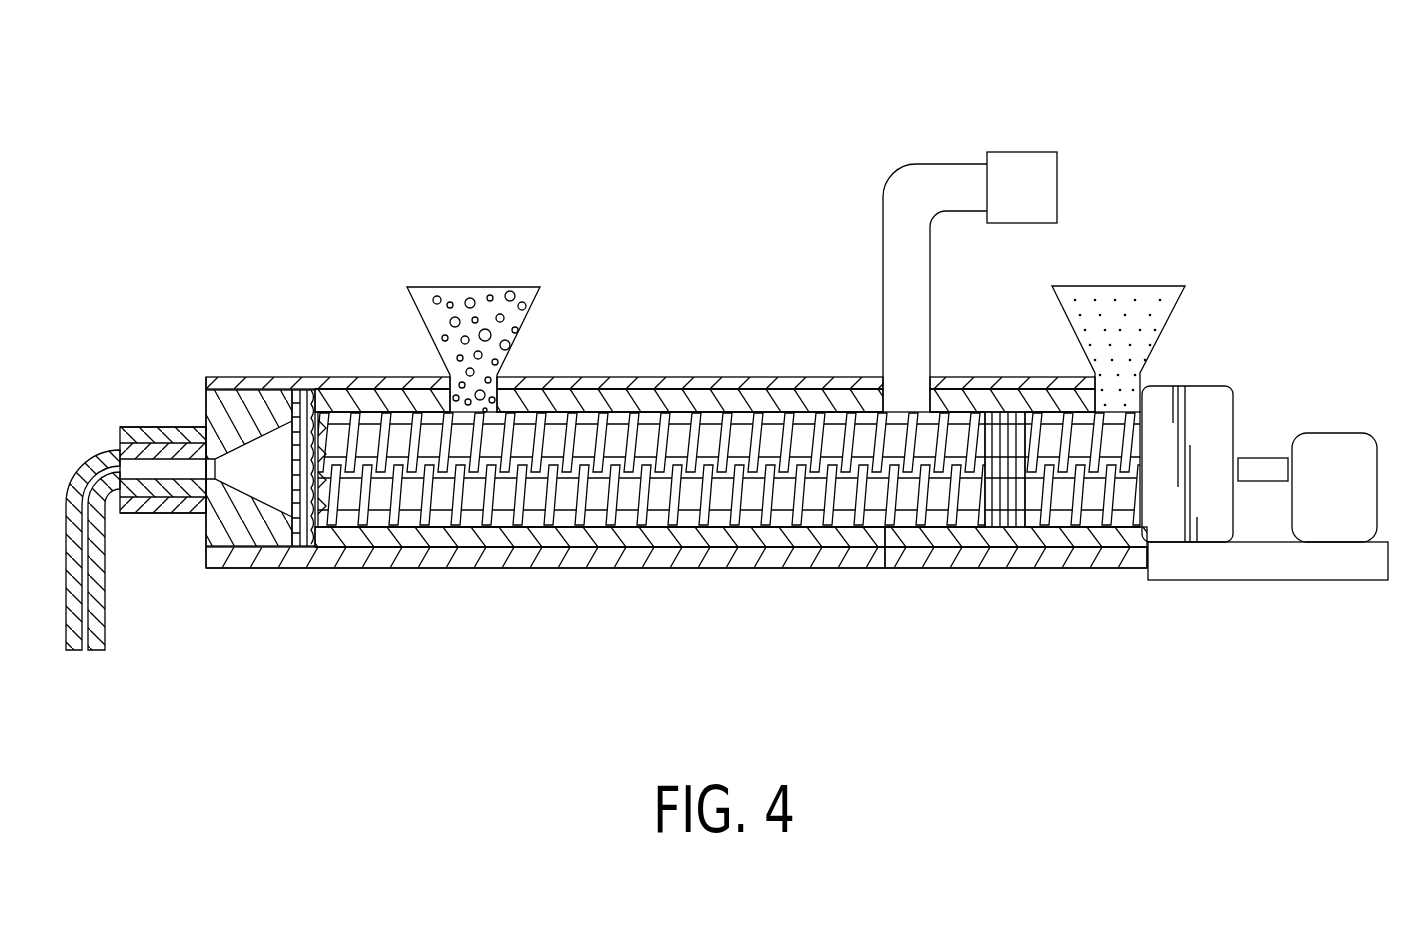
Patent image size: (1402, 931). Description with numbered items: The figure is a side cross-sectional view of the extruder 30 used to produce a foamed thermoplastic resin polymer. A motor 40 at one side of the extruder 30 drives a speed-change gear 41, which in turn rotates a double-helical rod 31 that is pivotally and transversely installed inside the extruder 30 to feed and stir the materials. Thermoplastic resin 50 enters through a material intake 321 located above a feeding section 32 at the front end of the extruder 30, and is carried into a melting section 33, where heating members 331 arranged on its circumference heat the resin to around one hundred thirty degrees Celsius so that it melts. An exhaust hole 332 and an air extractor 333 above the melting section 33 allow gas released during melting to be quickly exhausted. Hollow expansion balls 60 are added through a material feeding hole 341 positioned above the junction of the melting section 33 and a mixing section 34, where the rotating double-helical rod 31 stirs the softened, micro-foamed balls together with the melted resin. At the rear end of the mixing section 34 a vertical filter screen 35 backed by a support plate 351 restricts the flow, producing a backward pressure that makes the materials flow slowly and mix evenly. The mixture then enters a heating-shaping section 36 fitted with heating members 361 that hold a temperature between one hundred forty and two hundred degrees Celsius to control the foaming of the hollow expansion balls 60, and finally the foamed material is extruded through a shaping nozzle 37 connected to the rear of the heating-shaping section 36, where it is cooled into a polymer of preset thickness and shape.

The extruder 30 is at (1252, 150).
The double-helical rod 31 is at (1057, 418).
The feeding section 32 is at (1118, 570).
The material intake 321 is at (1145, 285).
The melting section 33 is at (905, 568).
The heating members 331 is at (1035, 568).
The exhaust hole 332 is at (897, 242).
The air extractor 333 is at (1015, 152).
The mixing section 34 is at (676, 568).
The material feeding hole 341 is at (447, 285).
The filter screen 35 is at (305, 548).
The support plate 351 is at (290, 548).
The heating-shaping section 36 is at (153, 497).
The heating members 361 is at (164, 436).
The shaping nozzle 37 is at (86, 655).
The motor 40 is at (1345, 433).
The speed-change gear 41 is at (1213, 386).
The thermoplastic resin 50 is at (1156, 298).
The hollow expansion balls 60 is at (502, 302).